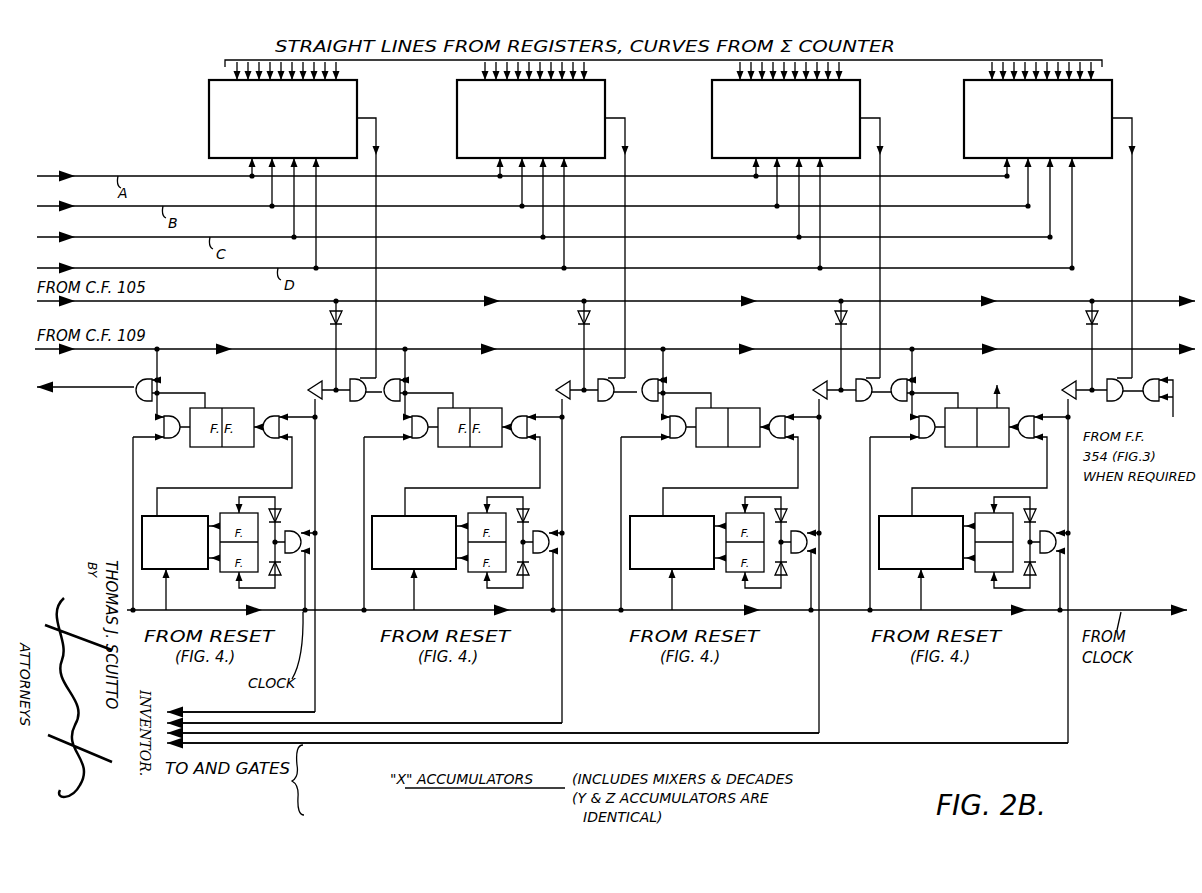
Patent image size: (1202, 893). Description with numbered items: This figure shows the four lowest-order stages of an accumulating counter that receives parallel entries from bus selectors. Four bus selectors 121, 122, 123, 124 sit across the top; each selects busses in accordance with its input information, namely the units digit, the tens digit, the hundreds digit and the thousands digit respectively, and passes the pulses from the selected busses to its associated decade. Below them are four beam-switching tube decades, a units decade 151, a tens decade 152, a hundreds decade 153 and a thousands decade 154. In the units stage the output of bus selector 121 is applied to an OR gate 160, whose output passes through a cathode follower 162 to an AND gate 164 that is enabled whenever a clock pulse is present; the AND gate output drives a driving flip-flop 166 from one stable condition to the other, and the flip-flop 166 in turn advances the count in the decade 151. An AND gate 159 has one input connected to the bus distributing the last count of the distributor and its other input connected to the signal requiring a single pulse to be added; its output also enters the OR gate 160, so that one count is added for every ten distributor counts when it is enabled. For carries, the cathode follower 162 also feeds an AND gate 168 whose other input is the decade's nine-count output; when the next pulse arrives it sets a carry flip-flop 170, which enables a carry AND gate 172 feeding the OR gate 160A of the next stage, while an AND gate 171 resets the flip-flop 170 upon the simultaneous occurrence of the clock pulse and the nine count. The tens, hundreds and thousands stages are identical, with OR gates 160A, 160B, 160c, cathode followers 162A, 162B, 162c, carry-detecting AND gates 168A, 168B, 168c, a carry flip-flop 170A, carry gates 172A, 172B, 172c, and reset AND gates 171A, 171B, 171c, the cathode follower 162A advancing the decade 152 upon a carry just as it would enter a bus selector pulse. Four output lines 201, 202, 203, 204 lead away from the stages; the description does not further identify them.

The bus selector 124 is at (209, 128).
The bus selector 123 is at (457, 94).
The bus selector 122 is at (712, 111).
The bus selector 121 is at (964, 128).
The carry AND gate 172c is at (134, 386).
The AND gate 168c is at (272, 415).
The reset AND gate 171c is at (169, 440).
The cathode follower 162c is at (313, 381).
The OR gate 160c is at (357, 402).
The carry AND gate 172B is at (392, 379).
The cathode follower 162B is at (567, 381).
The AND gate 168B is at (523, 415).
The reset AND gate 171B is at (417, 440).
The OR gate 160B is at (604, 402).
The carry AND gate 172A is at (652, 379).
The cathode follower 162A is at (818, 381).
The AND gate 168A is at (775, 440).
The reset AND gate 171A is at (676, 440).
The carry flip-flop 170A is at (751, 447).
The OR gate 160A is at (861, 402).
The carry AND gate 172 is at (897, 379).
The cathode follower 162 is at (1075, 380).
The AND gate 168 is at (1029, 416).
The OR gate 160 is at (1113, 380).
The AND gate 159 is at (1150, 380).
The reset AND gate 171 is at (919, 440).
The carry flip-flop 170 is at (968, 447).
The beam-switching tube decade 154 is at (198, 569).
The beam-switching tube decade 153 is at (448, 570).
The beam-switching tube decade 152 is at (703, 570).
The beam-switching tube decade 151 is at (892, 569).
The driving flip-flop 166 is at (977, 572).
The AND gate 164 is at (1052, 533).
The output line to AND gates 204 is at (370, 713).
The output line to AND gates 203 is at (380, 724).
The output line to AND gates 202 is at (390, 734).
The output line to AND gates 201 is at (400, 744).